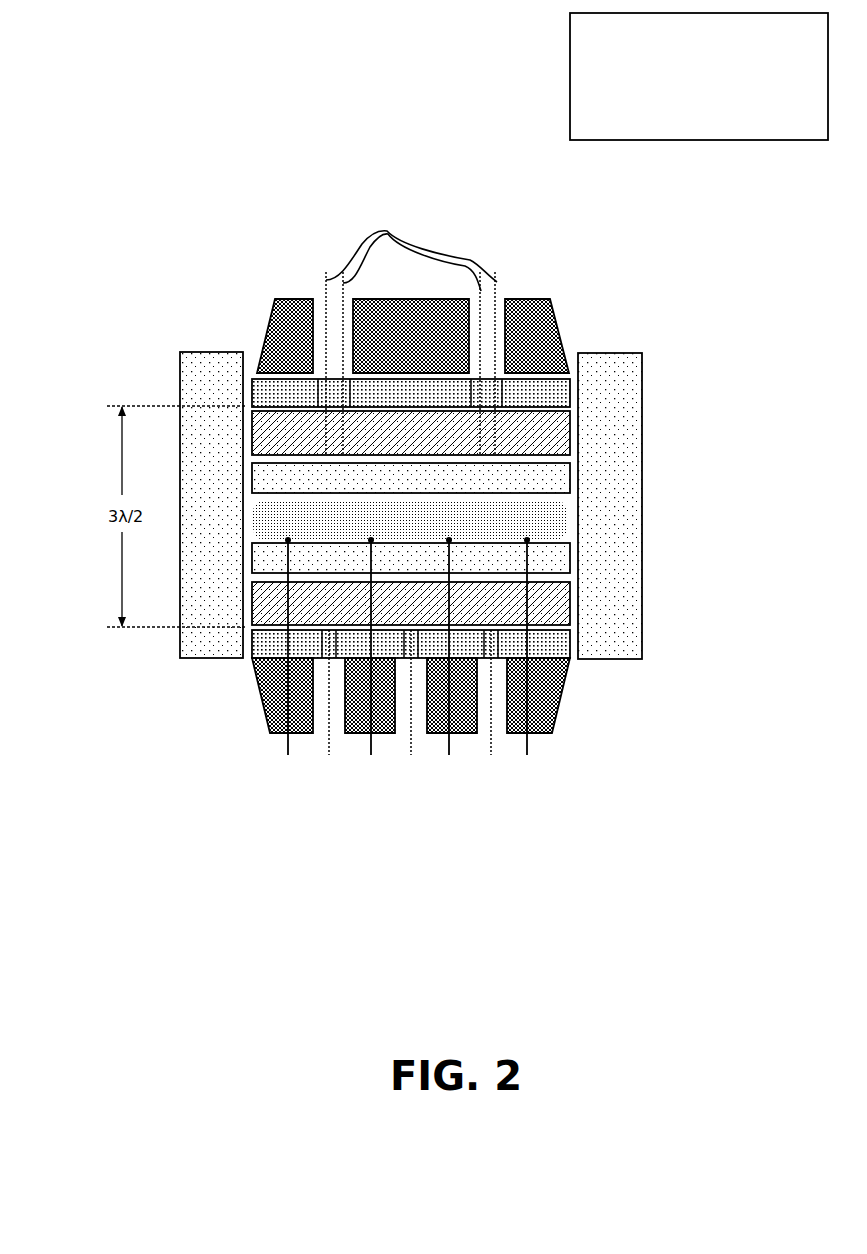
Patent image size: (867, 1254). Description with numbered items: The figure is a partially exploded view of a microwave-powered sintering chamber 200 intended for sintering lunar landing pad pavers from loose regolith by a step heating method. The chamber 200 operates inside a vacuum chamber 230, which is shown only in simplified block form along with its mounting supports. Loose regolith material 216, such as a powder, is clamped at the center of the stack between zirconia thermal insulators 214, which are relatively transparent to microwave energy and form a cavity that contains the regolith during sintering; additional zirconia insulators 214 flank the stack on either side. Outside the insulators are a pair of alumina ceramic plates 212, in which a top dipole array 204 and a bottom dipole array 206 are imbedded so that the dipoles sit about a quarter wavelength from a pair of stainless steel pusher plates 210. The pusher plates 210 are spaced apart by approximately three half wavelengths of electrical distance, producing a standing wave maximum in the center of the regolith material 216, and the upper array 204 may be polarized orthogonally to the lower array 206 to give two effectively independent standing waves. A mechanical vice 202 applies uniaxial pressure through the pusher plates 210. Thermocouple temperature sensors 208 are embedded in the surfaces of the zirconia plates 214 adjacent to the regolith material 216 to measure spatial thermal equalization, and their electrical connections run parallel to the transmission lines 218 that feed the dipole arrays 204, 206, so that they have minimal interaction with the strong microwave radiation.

The sintering chamber 200 is at (117, 164).
The mechanical vice 202 is at (532, 298).
The top dipole array 204 is at (291, 445).
The bottom dipole array 206 is at (330, 590).
The thermocouple temperature sensors 208 is at (286, 747).
The stainless steel pusher plates 210 is at (561, 392).
The alumina ceramic plates 212 is at (554, 421).
The zirconia thermal insulators 214 is at (200, 357).
The regolith material 216 is at (568, 515).
The transmission lines 218 is at (463, 820).
The vacuum chamber 230 is at (722, 101).